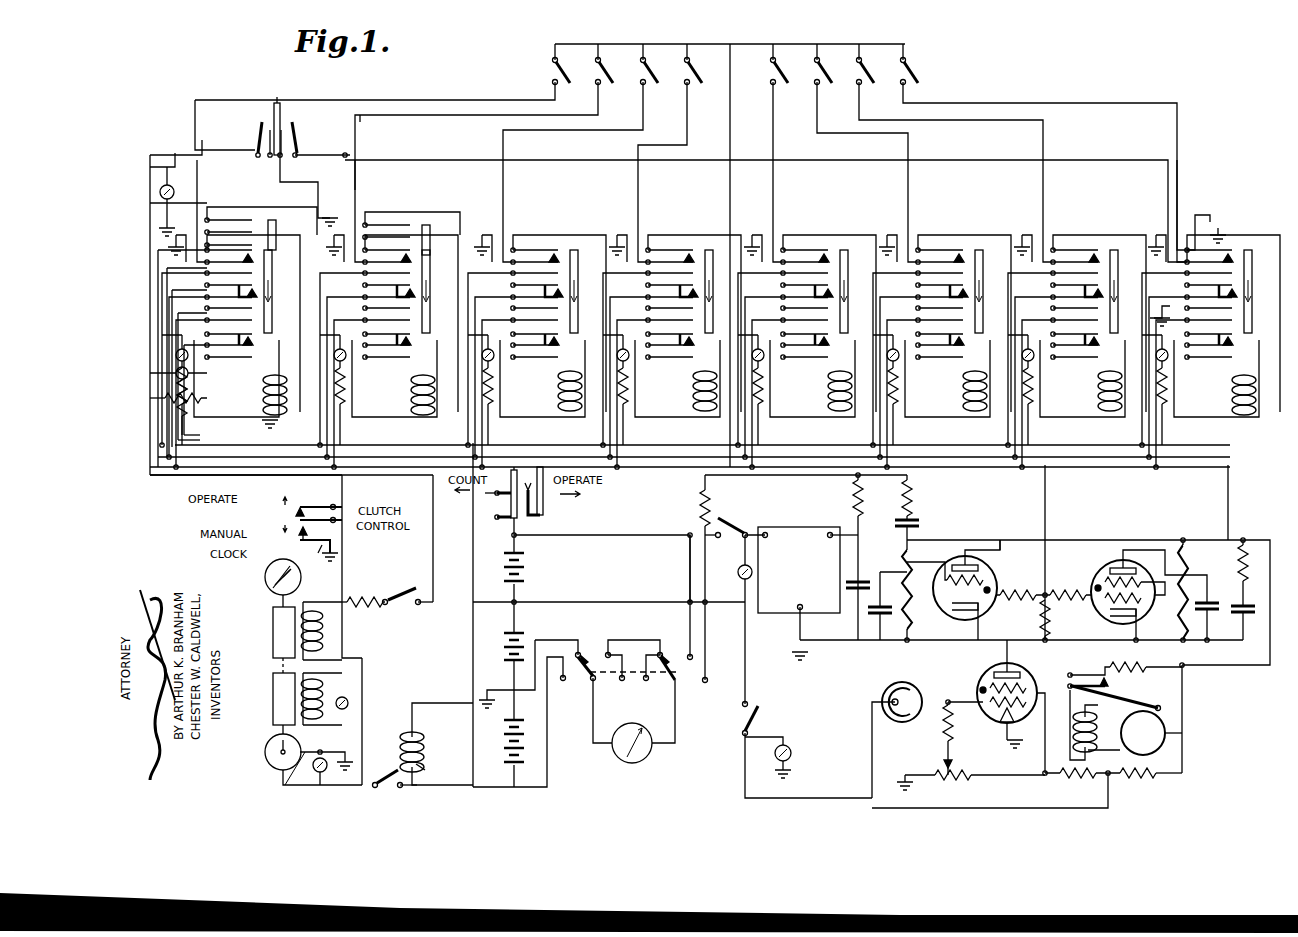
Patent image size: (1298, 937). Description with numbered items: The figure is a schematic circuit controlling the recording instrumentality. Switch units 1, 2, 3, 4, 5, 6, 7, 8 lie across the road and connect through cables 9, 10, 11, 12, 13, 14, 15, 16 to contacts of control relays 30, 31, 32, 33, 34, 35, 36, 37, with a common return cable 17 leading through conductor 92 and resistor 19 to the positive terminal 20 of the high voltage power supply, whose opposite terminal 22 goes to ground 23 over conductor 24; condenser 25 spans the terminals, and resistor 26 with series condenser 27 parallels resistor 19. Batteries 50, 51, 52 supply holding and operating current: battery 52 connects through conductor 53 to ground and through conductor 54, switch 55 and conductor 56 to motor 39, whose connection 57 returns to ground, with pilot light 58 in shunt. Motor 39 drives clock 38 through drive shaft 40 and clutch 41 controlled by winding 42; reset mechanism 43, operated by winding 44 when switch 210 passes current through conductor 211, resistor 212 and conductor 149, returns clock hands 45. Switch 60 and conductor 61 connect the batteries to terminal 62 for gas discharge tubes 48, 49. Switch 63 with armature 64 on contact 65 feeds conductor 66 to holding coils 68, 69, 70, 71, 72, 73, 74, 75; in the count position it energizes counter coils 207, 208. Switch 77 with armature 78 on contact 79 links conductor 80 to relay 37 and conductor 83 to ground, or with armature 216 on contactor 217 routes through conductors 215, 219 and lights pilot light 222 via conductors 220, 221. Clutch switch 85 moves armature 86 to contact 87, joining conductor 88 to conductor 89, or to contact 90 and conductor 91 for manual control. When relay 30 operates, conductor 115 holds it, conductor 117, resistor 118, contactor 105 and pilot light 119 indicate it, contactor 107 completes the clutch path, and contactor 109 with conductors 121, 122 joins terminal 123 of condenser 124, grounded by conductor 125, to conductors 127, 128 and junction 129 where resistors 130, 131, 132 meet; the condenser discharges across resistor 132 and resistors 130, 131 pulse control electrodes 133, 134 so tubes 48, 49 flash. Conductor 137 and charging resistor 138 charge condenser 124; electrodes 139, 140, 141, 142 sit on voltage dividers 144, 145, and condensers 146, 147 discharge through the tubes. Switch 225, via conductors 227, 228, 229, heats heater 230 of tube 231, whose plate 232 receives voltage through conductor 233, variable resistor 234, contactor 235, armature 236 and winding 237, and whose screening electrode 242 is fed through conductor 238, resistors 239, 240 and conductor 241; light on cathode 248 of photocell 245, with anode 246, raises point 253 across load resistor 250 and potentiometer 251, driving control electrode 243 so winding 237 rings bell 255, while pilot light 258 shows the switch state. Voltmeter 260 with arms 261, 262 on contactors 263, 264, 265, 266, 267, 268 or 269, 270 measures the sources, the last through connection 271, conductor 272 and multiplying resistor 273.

The switch unit 1 is at (389, 75).
The switch unit 2 is at (490, 102).
The switch unit 3 is at (586, 102).
The switch unit 4 is at (676, 102).
The switch unit 5 is at (786, 102).
The switch unit 6 is at (862, 102).
The switch unit 7 is at (950, 102).
The switch unit 8 is at (920, 90).
The cable 9 is at (398, 100).
The cable 10 is at (405, 115).
The cable 11 is at (568, 130).
The cable 12 is at (688, 145).
The cable 13 is at (776, 153).
The cable 14 is at (862, 134).
The cable 15 is at (982, 122).
The cable 16 is at (1104, 108).
The cable 17 is at (733, 90).
The resistor 19 is at (856, 490).
The positive terminal 20 is at (840, 519).
The negative terminal 22 is at (805, 612).
The ground 23 is at (160, 234).
The conductor 24 is at (790, 630).
The condenser unit 25 is at (862, 580).
The second resistor 26 is at (912, 490).
The condenser 27 is at (920, 523).
The control relay 30 is at (275, 240).
The control relay 31 is at (432, 275).
The control relay 32 is at (578, 245).
The control relay 33 is at (712, 346).
The control relay 34 is at (848, 348).
The control relay 35 is at (983, 348).
The control relay 36 is at (1118, 348).
The control relay 37 is at (1252, 273).
The clock arrangement 38 is at (263, 577).
The motor 39 is at (264, 750).
The drive shaft 40 is at (272, 728).
The clutch element 41 is at (272, 683).
The clutch actuating winding 42 is at (318, 685).
The reset mechanism 43 is at (272, 645).
The reset winding 44 is at (330, 638).
The clock hands 45 is at (266, 586).
The gas discharge tube 48 is at (985, 565).
The gas discharge tube 49 is at (1115, 566).
The battery 50 is at (530, 558).
The battery 51 is at (501, 646).
The battery 52 is at (523, 738).
The conductor 53 is at (499, 682).
The conductor 54 is at (508, 734).
The switch 55 is at (392, 792).
The conductor 56 is at (312, 777).
The connection 57 is at (287, 778).
The pilot light 58 is at (328, 772).
The switch unit 60 is at (728, 545).
The conductor 61 is at (618, 537).
The terminal 62 is at (760, 530).
The Count-Operate switch 63 is at (495, 514).
The switch armature 64 is at (497, 487).
The right side contact 65 is at (535, 500).
The conductor 66 is at (540, 470).
The relay holding coil 68 is at (263, 404).
The relay holding coil 69 is at (411, 402).
The relay holding coil 70 is at (558, 392).
The relay holding coil 71 is at (693, 392).
The relay holding coil 72 is at (828, 392).
The relay holding coil 73 is at (963, 396).
The relay holding coil 74 is at (1098, 392).
The relay holding coil 75 is at (1252, 420).
The Two-All switch 77 is at (279, 97).
The switch armature 78 is at (297, 122).
The right side contact point 79 is at (300, 130).
The conductor 80 is at (1130, 162).
The conductor 83 is at (1200, 213).
The switch unit 85 is at (345, 505).
The switch armature 86 is at (298, 519).
The upper contact element 87 is at (300, 507).
The conductor 88 is at (335, 547).
The conductor 89 is at (248, 375).
The lower contact 90 is at (302, 542).
The conductor 91 is at (317, 558).
The conductor 92 is at (788, 476).
The contactor 105 is at (162, 371).
The contactor 107 is at (162, 352).
The contactor 109 is at (162, 363).
The conductor 115 is at (207, 421).
The conductor 117 is at (204, 430).
The voltage dropping resistor 118 is at (204, 407).
The pilot light 119 is at (162, 371).
The conductor 121 is at (162, 384).
The conductor 122 is at (262, 470).
The terminal point 123 is at (1245, 580).
The condenser 124 is at (1246, 615).
The conductor 125 is at (1208, 652).
The conductor 127 is at (581, 513).
The conductor 128 is at (1047, 488).
The junction point 129 is at (1022, 583).
The resistor 130 is at (978, 603).
The resistor 131 is at (1068, 582).
The discharge resistor 132 is at (1050, 628).
The control electrode 133 is at (1007, 626).
The control electrode 134 is at (1105, 600).
The conductor 137 is at (975, 538).
The charging resistor 138 is at (1245, 540).
The electrode 139 is at (985, 575).
The plate electrode 140 is at (990, 538).
The electrode 141 is at (1105, 580).
The plate electrode 142 is at (1123, 548).
The voltage divider 144 is at (910, 636).
The voltage divider 145 is at (1186, 540).
The condenser 146 is at (878, 616).
The condenser 147 is at (1209, 600).
The conductor 149 is at (365, 735).
The counter coil 207 is at (420, 738).
The counter coil 208 is at (440, 769).
The switch element 210 is at (408, 603).
The conductor 211 is at (448, 596).
The voltage dropping resistor 212 is at (378, 594).
The conductor 215 is at (296, 180).
The switch armature 216 is at (262, 122).
The left side contactor 217 is at (265, 133).
The conductor 219 is at (350, 168).
The conductor 220 is at (432, 548).
The conductor 221 is at (176, 153).
The pilot light 222 is at (160, 188).
The switch element 225 is at (742, 718).
The conductor 227 is at (585, 595).
The conductor 228 is at (748, 686).
The conductor 229 is at (842, 798).
The heater element 230 is at (970, 762).
The gas discharge tube 231 is at (980, 690).
The anode 232 is at (1004, 668).
The conductor 233 is at (1265, 668).
The variable resistor 234 is at (1128, 665).
The contactor 235 is at (1112, 684).
The armature 236 is at (1116, 698).
The winding 237 is at (1102, 726).
The conductor 238 is at (1184, 750).
The voltage dropping resistor 239 is at (1160, 777).
The voltage dropping resistor 240 is at (1080, 780).
The conductor 241 is at (1042, 778).
The screening electrode 242 is at (990, 670).
The control electrode 243 is at (1005, 712).
The photo-electric cell 245 is at (882, 692).
The anode 246 is at (893, 705).
The cathode 248 is at (893, 690).
The load resistor 250 is at (945, 755).
The potentiometer 251 is at (955, 780).
The junction point 253 is at (946, 725).
The bell 255 is at (1163, 727).
The pilot light 258 is at (775, 768).
The voltmeter 260 is at (636, 766).
The switch arm 261 is at (590, 690).
The switch arm 262 is at (646, 679).
The contactor 263 is at (563, 682).
The contactor 264 is at (668, 688).
The contactor 265 is at (578, 652).
The contactor 266 is at (658, 652).
The contactor 267 is at (606, 650).
The contactor 268 is at (693, 655).
The contactor 269 is at (615, 679).
The contactor 270 is at (728, 642).
The connection 271 is at (540, 630).
The conductor 272 is at (690, 578).
The resistor 273 is at (700, 498).